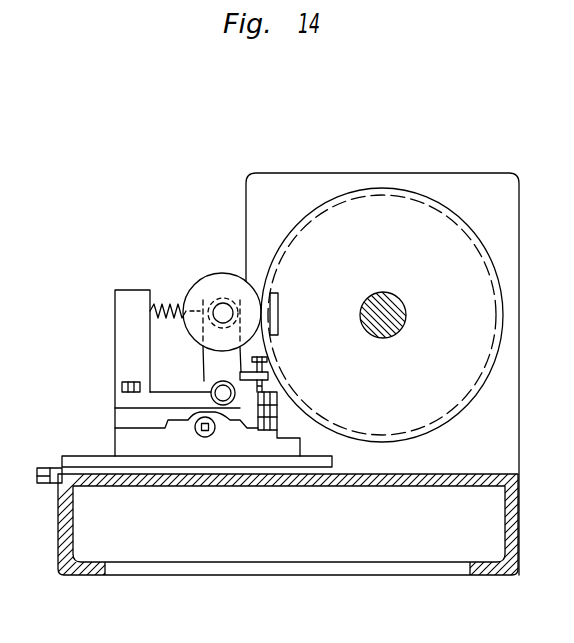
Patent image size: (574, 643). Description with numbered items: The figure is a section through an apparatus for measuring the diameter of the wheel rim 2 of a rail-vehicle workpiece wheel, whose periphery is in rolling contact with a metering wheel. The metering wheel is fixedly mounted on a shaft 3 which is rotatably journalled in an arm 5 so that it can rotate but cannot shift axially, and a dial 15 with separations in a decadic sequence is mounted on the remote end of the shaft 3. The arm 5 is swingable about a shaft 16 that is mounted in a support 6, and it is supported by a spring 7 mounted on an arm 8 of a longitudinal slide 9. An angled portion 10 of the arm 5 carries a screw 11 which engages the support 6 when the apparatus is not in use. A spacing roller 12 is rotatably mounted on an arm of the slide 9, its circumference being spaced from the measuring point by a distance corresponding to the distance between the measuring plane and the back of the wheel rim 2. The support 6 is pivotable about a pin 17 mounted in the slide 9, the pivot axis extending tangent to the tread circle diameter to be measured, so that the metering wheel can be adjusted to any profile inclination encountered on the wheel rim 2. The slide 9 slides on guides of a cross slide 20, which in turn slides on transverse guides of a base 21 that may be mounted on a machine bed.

The wheel rim 2 is at (293, 267).
The shaft 3 is at (220, 301).
The arm 5 is at (230, 300).
The support 6 is at (135, 402).
The spring 7 is at (165, 305).
The arm 8 is at (128, 325).
The longitudinal slide 9 is at (132, 420).
The angled portion 10 is at (243, 350).
The screw 11 is at (256, 394).
The spacing roller 12 is at (278, 306).
The dial 15 is at (204, 293).
The shaft 16 is at (212, 398).
The pin 17 is at (264, 395).
The cross slide 20 is at (128, 443).
The base 21 is at (60, 487).